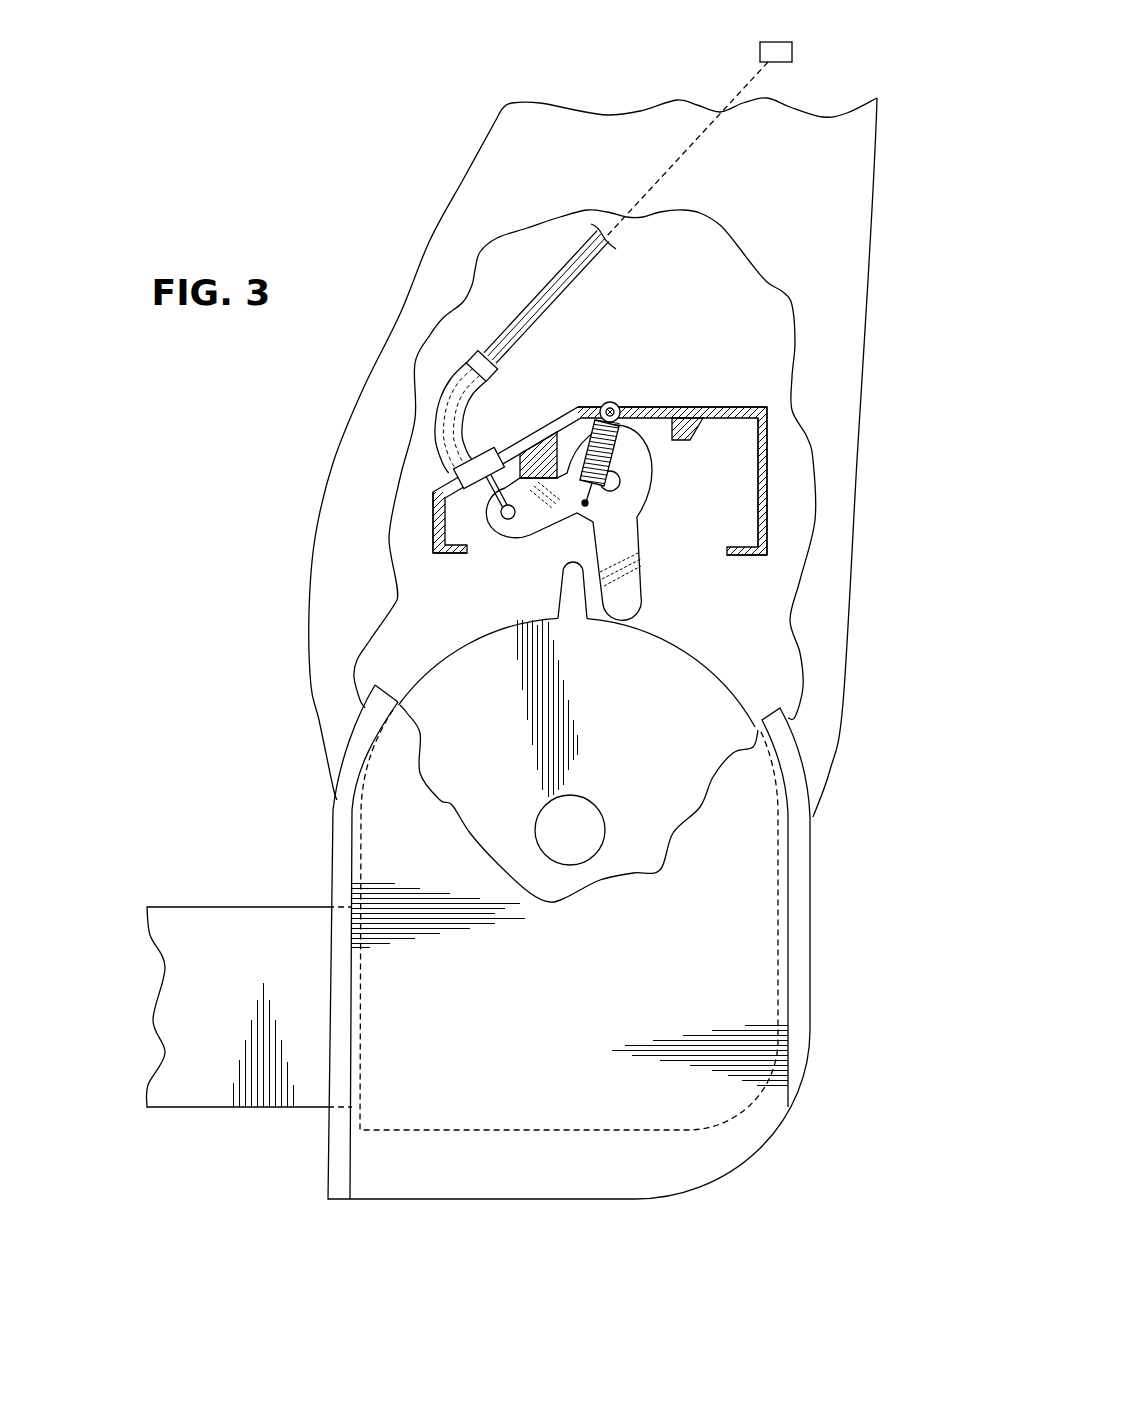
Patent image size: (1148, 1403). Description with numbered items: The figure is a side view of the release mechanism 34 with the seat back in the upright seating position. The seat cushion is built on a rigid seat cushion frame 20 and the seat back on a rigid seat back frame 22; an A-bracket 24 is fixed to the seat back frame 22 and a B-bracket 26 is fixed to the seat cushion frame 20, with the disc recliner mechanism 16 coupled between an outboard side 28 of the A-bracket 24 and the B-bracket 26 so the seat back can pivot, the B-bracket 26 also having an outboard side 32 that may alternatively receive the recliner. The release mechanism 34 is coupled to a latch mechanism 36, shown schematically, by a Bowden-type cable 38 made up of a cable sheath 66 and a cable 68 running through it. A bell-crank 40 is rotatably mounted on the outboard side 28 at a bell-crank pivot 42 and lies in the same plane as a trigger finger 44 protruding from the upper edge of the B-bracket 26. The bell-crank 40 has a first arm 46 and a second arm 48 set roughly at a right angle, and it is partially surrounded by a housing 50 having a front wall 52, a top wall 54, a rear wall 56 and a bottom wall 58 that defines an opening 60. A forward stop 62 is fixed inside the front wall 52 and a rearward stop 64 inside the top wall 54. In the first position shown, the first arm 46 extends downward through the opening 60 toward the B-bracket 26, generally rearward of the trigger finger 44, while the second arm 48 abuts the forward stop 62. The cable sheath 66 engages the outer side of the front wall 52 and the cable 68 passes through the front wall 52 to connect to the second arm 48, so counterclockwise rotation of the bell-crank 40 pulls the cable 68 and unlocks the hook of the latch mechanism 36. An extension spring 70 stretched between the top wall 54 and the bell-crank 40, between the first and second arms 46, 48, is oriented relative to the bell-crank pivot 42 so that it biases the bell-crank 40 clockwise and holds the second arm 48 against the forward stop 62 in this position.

The disc recliner mechanism 16 is at (573, 828).
The seat cushion frame 20 is at (225, 905).
The seat back frame 22 is at (535, 115).
The A-bracket 24 is at (852, 300).
The B-bracket 26 is at (700, 670).
The outboard side 28 is at (799, 193).
The outboard side 32 is at (451, 728).
The release mechanism 34 is at (306, 433).
The latch mechanism 36 is at (760, 48).
The Bowden-type cable 38 is at (573, 263).
The bell-crank 40 is at (651, 407).
The bell-crank pivot 42 is at (617, 483).
The trigger finger 44 is at (567, 583).
The first arm 46 is at (633, 585).
The second arm 48 is at (533, 520).
The housing 50 is at (770, 440).
The front wall 52 is at (457, 482).
The top wall 54 is at (723, 407).
The rear wall 56 is at (763, 482).
The bottom wall 58 is at (740, 550).
The opening 60 is at (465, 548).
The forward stop 62 is at (537, 435).
The rearward stop 64 is at (690, 440).
The cable sheath 66 is at (502, 333).
The cable 68 is at (442, 518).
The extension spring 70 is at (602, 404).